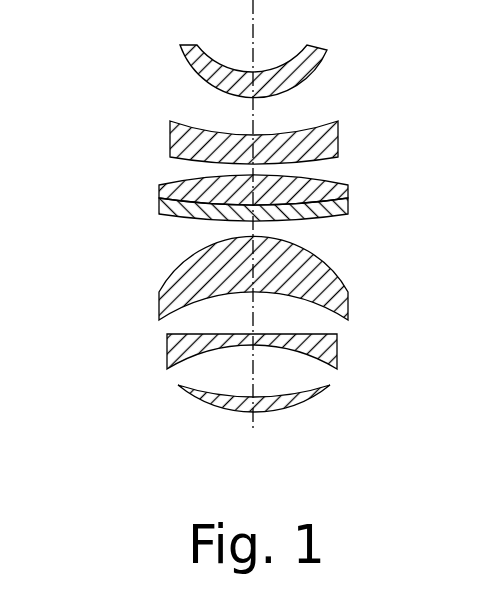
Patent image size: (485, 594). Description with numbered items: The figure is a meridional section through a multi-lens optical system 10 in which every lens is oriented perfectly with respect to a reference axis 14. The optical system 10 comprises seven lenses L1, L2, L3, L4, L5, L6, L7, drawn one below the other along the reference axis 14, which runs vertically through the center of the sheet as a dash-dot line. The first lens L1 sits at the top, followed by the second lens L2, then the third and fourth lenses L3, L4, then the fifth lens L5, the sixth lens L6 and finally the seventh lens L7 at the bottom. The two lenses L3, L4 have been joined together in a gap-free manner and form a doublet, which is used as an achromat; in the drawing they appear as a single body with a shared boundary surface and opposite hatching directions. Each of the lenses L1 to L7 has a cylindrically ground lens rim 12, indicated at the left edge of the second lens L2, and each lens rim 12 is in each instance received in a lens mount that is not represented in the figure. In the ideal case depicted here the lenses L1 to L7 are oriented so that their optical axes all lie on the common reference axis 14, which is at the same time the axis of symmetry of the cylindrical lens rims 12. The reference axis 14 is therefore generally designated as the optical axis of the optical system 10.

The optical system 10 is at (236, 228).
The lens rim 12 is at (254, 141).
The reference axis 14 is at (253, 30).
The lens L1 is at (307, 77).
The lens L2 is at (338, 138).
The lens L3 is at (348, 193).
The lens L4 is at (348, 213).
The lens L5 is at (348, 302).
The lens L6 is at (337, 347).
The lens L7 is at (330, 386).